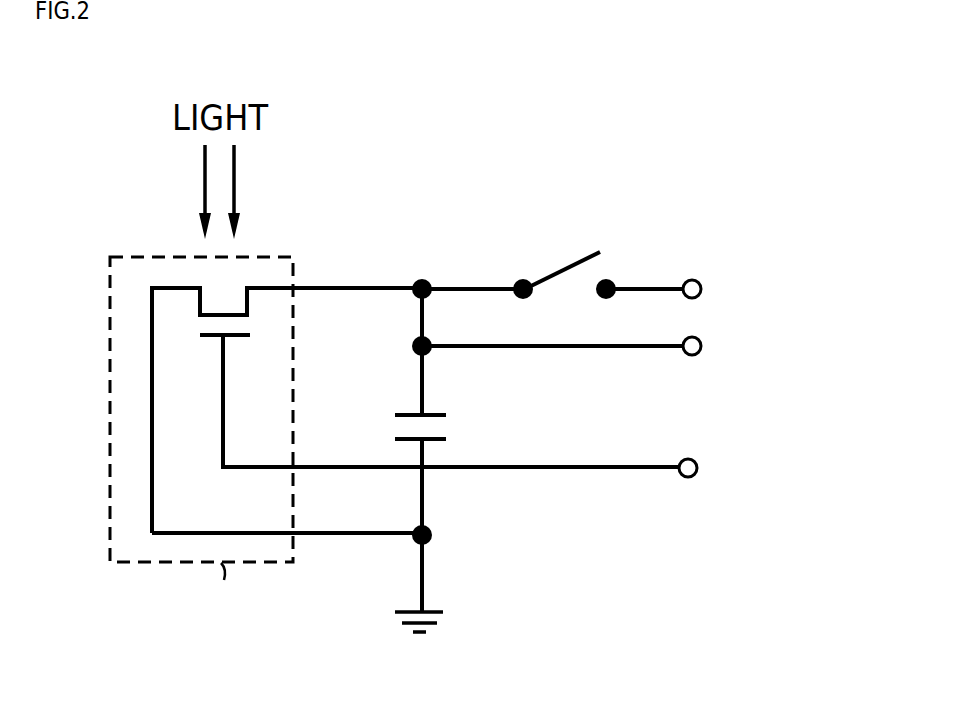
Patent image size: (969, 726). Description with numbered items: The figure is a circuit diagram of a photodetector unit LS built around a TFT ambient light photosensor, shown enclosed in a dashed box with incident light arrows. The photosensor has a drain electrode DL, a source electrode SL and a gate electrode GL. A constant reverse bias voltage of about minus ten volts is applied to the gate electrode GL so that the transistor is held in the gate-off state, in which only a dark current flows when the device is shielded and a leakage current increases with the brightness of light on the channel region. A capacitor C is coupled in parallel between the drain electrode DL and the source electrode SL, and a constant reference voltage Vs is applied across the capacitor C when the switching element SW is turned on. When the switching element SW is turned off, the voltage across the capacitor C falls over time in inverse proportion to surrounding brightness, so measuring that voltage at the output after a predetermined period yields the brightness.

The photodetector unit LS is at (693, 148).
The switching element SW is at (519, 252).
The capacitor C is at (403, 427).
The drain electrode DL is at (188, 410).
The source electrode SL is at (323, 309).
The gate electrode GL is at (439, 401).